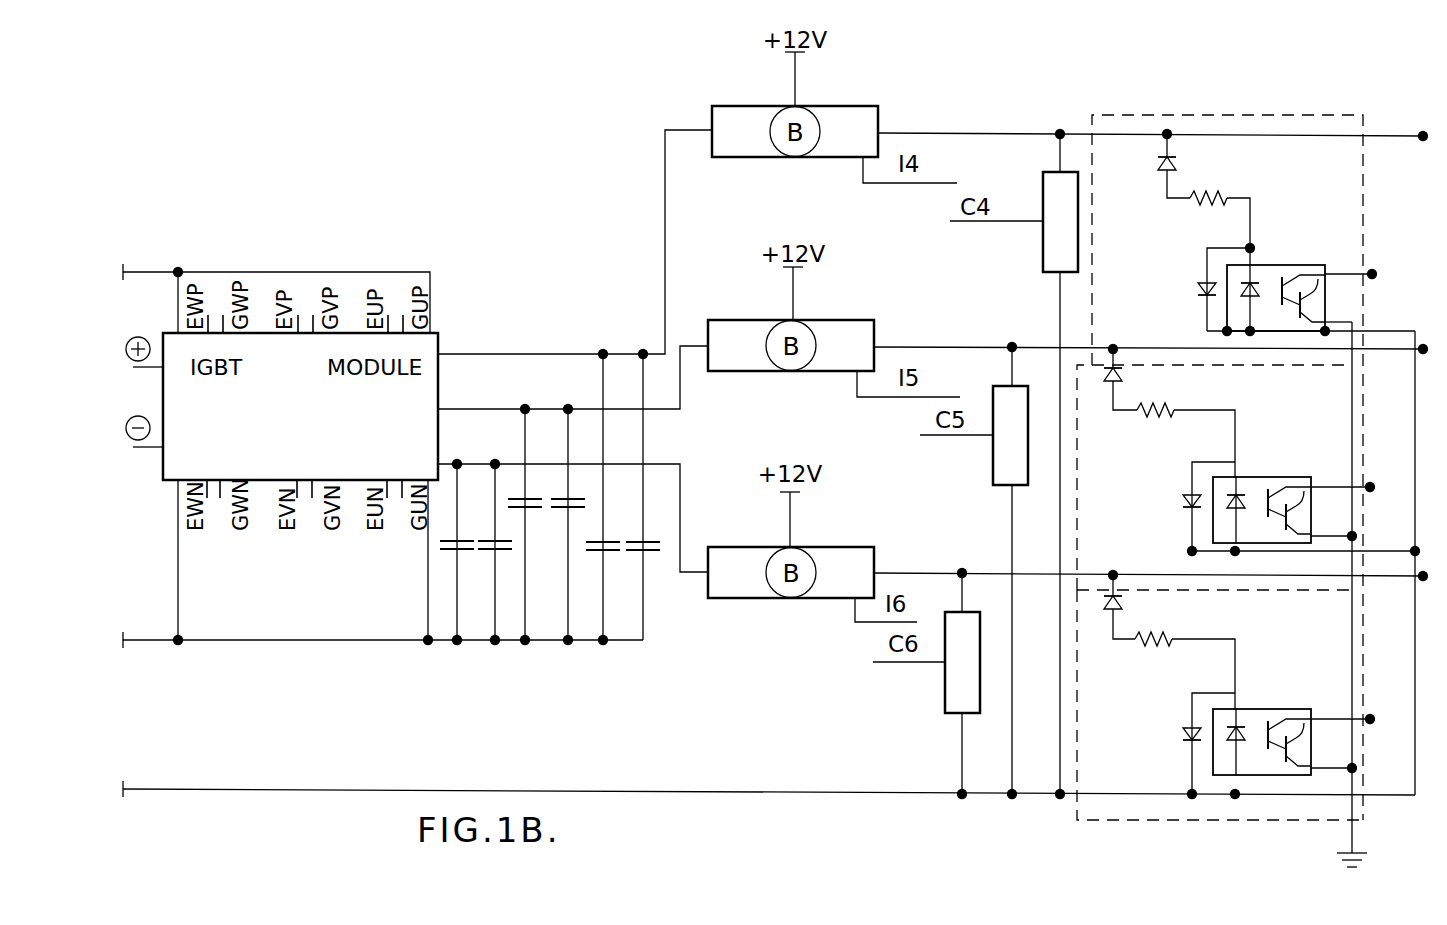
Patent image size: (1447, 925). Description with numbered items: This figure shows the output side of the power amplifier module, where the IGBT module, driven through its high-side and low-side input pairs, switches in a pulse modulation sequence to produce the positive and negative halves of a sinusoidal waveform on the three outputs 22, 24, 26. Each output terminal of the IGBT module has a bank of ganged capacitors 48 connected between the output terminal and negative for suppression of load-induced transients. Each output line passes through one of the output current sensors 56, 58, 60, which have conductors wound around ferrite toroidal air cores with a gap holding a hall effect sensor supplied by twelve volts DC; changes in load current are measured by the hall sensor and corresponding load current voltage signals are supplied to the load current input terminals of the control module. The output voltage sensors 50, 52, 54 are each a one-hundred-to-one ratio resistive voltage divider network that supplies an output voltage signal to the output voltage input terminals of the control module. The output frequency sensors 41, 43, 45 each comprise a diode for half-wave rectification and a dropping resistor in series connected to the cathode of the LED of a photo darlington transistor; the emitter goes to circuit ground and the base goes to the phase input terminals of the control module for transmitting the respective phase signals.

The output 22 is at (1418, 134).
The output 24 is at (1169, 349).
The output 26 is at (1178, 575).
The output frequency sensor 41 is at (1275, 115).
The output frequency sensor 43 is at (1362, 447).
The output frequency sensor 45 is at (1360, 691).
The ganged capacitors 48 is at (622, 563).
The output voltage sensor 50 is at (1043, 238).
The output voltage sensor 52 is at (993, 460).
The output voltage sensor 54 is at (945, 685).
The output current sensor 56 is at (835, 106).
The output current sensor 58 is at (835, 320).
The output current sensor 60 is at (835, 547).